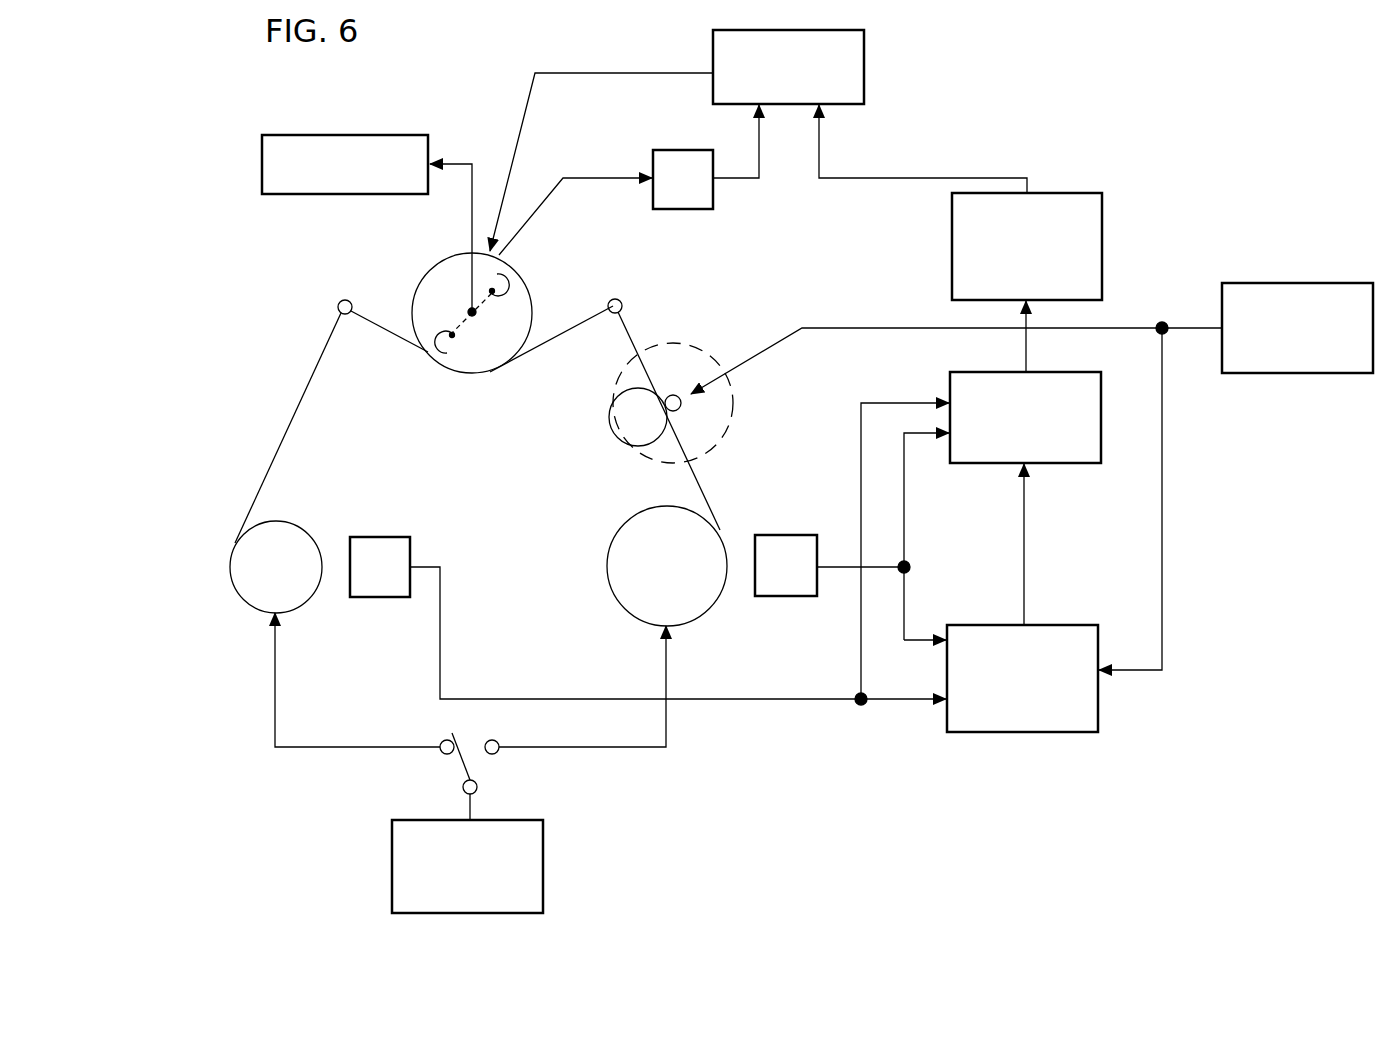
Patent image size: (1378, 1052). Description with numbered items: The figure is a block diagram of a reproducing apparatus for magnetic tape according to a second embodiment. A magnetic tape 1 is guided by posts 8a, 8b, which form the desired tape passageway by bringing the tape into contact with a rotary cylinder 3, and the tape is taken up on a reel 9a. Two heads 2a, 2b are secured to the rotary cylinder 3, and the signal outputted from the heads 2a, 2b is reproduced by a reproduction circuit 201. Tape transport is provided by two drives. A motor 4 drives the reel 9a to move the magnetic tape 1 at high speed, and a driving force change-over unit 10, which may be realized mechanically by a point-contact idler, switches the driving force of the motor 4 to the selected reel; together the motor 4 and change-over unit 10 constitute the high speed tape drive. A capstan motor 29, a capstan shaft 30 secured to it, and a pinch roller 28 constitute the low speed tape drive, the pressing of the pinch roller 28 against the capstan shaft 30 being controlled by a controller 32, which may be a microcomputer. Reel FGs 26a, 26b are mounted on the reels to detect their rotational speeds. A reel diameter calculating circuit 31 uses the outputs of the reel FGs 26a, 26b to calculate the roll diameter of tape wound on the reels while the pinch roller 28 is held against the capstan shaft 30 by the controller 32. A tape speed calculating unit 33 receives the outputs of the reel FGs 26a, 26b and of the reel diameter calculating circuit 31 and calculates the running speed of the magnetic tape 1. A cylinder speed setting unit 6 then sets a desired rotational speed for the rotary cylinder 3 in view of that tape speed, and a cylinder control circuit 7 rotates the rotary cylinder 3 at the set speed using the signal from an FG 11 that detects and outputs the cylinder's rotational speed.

The magnetic tape 1 is at (643, 330).
The head 2a is at (510, 285).
The head 2b is at (423, 343).
The rotary cylinder 3 is at (533, 312).
The motor 4 is at (543, 858).
The cylinder speed setting unit 6 is at (1058, 193).
The cylinder control circuit 7 is at (864, 73).
The post 8a is at (347, 298).
The post 8b is at (620, 299).
The reel 9a is at (247, 565).
The driving force change-over unit 10 is at (458, 767).
The FG 11 is at (678, 150).
The reel FG 26a is at (398, 597).
The reel FG 26b is at (778, 596).
The pinch roller 28 is at (607, 428).
The capstan motor 29 is at (703, 352).
The capstan shaft 30 is at (680, 410).
The reel diameter calculating circuit 31 is at (1058, 625).
The controller 32 is at (1335, 283).
The tape speed calculating unit 33 is at (1101, 410).
The reproduction circuit 201 is at (377, 135).